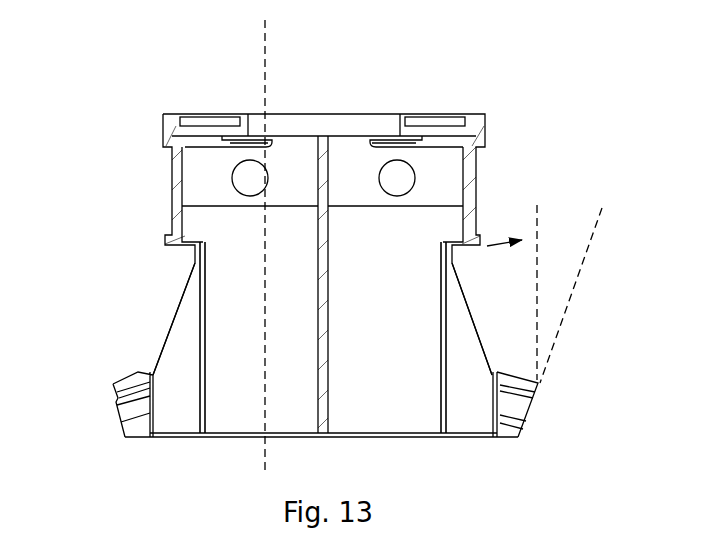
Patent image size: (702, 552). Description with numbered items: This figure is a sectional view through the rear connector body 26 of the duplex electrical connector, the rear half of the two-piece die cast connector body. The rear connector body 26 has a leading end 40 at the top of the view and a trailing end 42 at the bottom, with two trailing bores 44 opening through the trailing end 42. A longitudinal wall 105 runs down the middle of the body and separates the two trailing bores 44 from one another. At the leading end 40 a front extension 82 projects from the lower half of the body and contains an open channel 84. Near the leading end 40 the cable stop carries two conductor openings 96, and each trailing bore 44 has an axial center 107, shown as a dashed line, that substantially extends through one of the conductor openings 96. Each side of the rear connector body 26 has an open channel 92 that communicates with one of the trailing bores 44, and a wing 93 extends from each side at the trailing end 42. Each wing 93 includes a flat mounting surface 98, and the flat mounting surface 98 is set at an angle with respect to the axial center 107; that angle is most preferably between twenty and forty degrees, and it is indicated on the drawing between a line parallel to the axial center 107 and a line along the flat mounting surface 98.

The rear connector body 26 is at (86, 87).
The leading end 40 is at (321, 114).
The trailing end 42 is at (295, 438).
The trailing bores 44 is at (291, 325).
The front extension 82 is at (485, 131).
The open channel 84 is at (417, 114).
The open channel 92 is at (172, 318).
The wing 93 is at (118, 382).
The conductor openings 96 is at (385, 114).
The flat mounting surface 98 is at (545, 400).
The longitudinal wall 105 is at (330, 256).
The axial center 107 is at (265, 44).